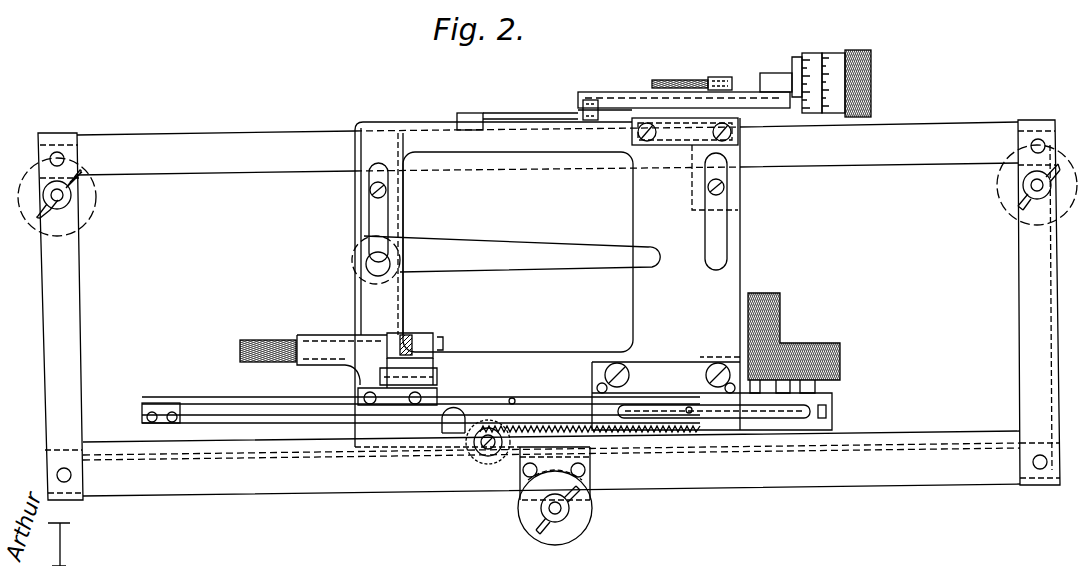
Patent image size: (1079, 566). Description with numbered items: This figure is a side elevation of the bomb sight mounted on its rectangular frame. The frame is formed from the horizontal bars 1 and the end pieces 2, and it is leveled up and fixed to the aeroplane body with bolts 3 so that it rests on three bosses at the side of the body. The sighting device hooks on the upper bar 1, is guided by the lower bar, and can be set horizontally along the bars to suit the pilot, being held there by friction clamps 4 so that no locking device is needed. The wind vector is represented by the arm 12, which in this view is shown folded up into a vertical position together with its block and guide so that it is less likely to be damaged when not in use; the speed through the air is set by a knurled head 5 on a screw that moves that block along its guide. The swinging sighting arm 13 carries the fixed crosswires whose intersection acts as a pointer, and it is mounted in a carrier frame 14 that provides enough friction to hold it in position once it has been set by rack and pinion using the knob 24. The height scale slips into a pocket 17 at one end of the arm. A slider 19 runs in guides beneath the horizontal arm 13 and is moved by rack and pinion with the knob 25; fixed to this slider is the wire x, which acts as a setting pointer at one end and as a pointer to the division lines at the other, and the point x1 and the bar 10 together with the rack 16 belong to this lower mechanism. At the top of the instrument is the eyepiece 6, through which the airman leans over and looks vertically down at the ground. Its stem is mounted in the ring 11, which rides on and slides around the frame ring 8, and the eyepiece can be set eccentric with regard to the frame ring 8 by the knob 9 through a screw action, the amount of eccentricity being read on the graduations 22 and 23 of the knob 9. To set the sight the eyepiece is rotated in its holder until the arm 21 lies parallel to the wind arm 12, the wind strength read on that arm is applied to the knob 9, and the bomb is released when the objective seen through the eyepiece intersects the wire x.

The horizontal bar 1 is at (207, 148).
The end piece 2 is at (82, 334).
The bolt 3 is at (82, 185).
The clamp 4 is at (365, 222).
The knurled head 5 is at (255, 340).
The eyepiece 6 is at (673, 81).
The frame ring 8 is at (628, 130).
The knob 9 is at (863, 55).
The bar 10 is at (738, 80).
The ring 11 is at (583, 103).
The arm 12 is at (475, 238).
The sighting arm 13 is at (338, 415).
The carrier frame 14 is at (815, 398).
The rack bar 16 is at (256, 397).
The pocket 17 is at (160, 403).
The slider 19 is at (445, 422).
The arm 21 is at (791, 80).
The graduations 22 is at (812, 60).
The graduations 23 is at (838, 57).
The knob 24 is at (843, 362).
The knob 25 is at (470, 430).
The wire x is at (512, 398).
The reference point x1 is at (688, 407).